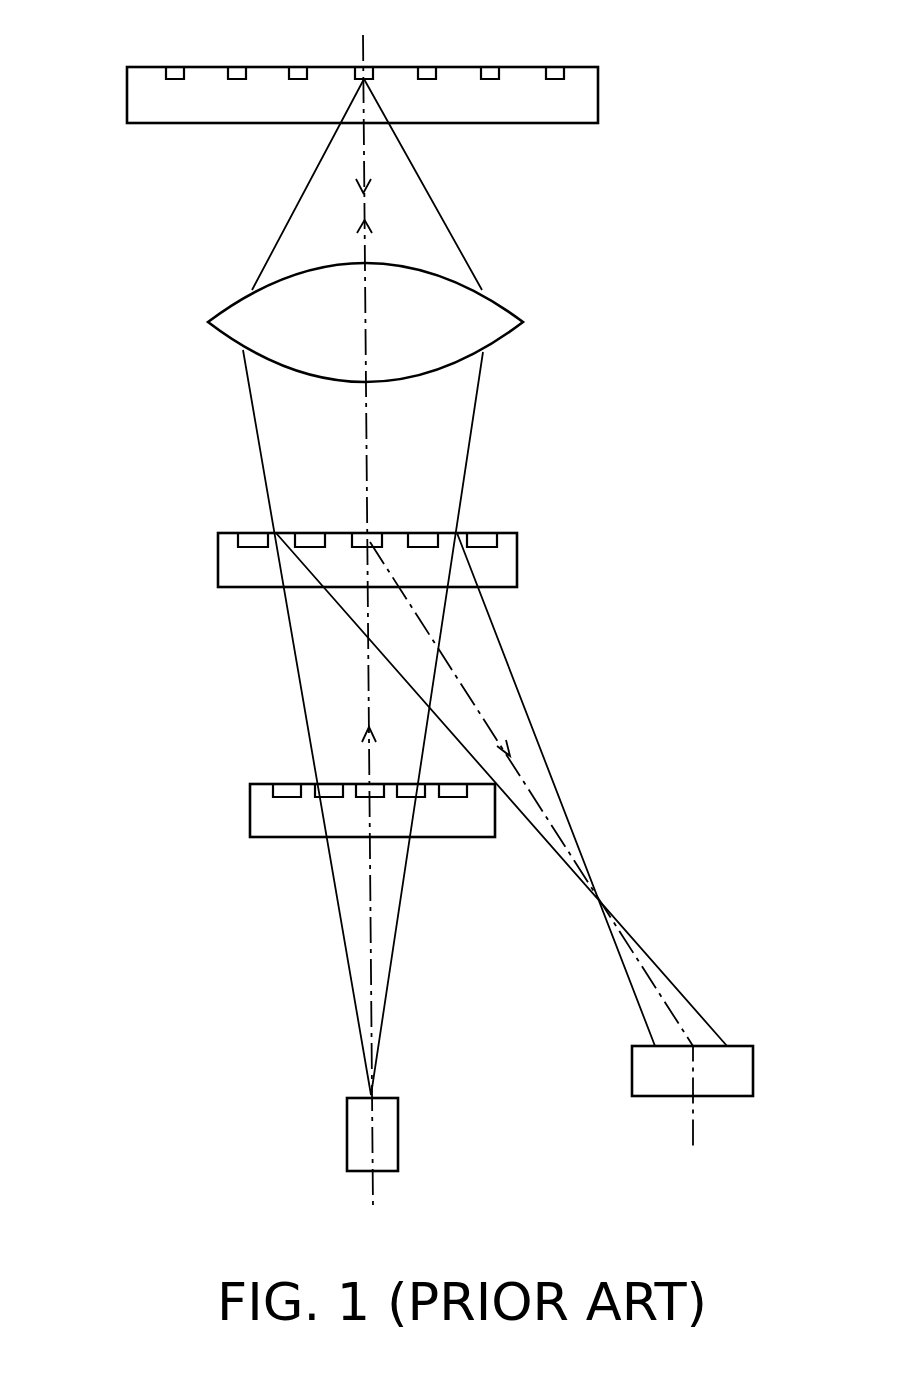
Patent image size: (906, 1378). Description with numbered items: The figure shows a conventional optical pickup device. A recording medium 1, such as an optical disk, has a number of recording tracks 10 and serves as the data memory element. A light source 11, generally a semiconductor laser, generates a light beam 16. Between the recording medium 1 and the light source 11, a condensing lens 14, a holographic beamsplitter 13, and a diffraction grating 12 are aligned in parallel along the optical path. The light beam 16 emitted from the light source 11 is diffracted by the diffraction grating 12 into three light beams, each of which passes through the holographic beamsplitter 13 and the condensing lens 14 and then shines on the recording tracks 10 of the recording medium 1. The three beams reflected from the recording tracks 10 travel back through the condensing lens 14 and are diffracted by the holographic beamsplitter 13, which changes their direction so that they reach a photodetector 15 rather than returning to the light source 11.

The recording medium 1 is at (155, 103).
The recording tracks 10 is at (236, 74).
The light source 11 is at (398, 1128).
The diffraction grating 12 is at (250, 812).
The holographic beamsplitter 13 is at (517, 557).
The condensing lens 14 is at (507, 307).
The photodetector 15 is at (753, 1070).
The light beam 16 is at (342, 930).